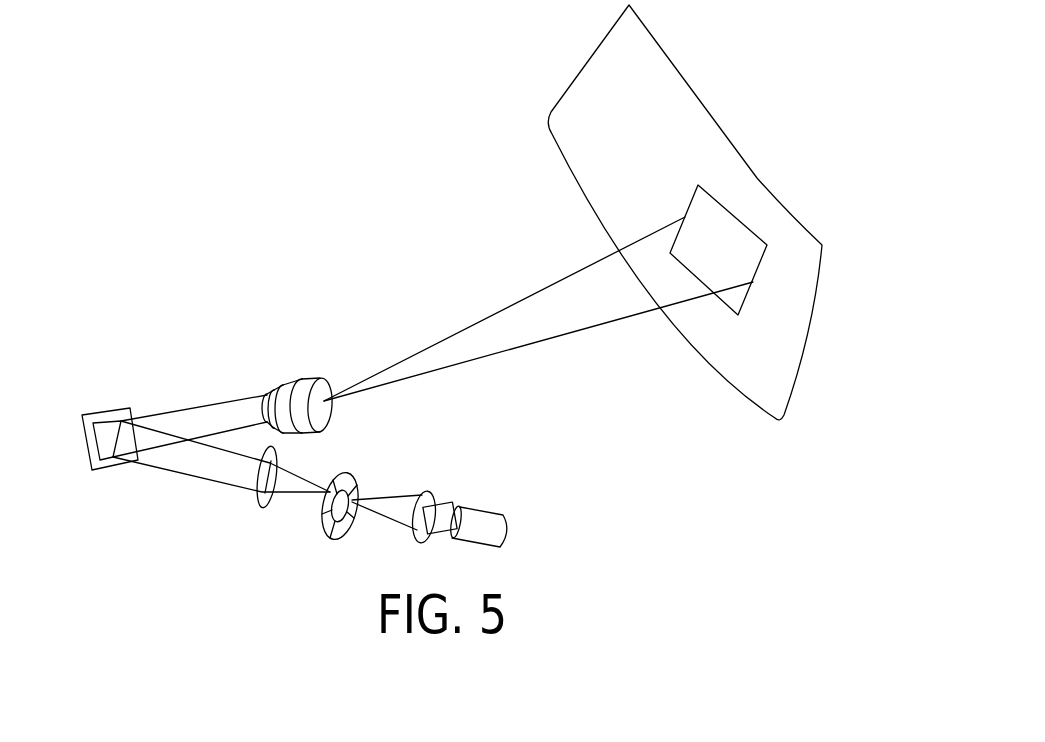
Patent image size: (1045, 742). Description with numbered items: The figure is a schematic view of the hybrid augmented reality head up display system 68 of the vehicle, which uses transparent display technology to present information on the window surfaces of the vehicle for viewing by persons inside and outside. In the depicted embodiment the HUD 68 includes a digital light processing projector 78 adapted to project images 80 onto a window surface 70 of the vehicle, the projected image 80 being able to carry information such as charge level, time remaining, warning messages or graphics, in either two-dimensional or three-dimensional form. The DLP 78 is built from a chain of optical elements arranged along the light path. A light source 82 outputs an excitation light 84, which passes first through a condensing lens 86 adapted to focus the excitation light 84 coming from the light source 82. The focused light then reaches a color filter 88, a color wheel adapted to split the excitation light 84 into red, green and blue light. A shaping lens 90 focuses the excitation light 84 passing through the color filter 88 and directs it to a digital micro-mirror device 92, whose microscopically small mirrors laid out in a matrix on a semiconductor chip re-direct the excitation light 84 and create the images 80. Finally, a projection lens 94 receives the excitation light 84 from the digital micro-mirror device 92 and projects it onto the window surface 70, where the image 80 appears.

The internal/external display system 68 is at (164, 538).
The window surface 70 is at (637, 123).
The digital light processing projector 78 is at (270, 528).
The image 80 is at (734, 213).
The light source 82 is at (495, 529).
The excitation light 84 is at (440, 520).
The condensing lens 86 is at (422, 543).
The color filter 88 is at (348, 474).
The shaping lens 90 is at (259, 500).
The digital micro-mirror device 92 is at (110, 413).
The projection lens 94 is at (288, 390).